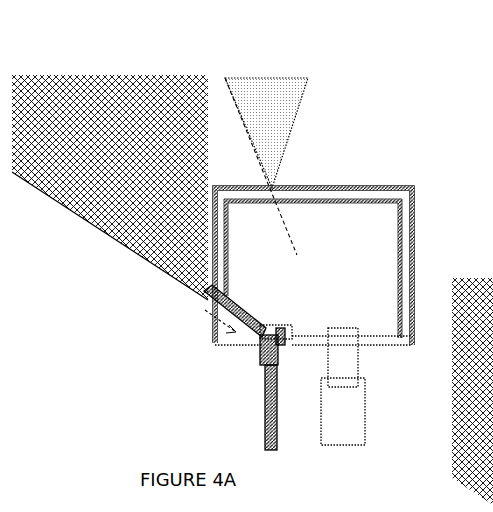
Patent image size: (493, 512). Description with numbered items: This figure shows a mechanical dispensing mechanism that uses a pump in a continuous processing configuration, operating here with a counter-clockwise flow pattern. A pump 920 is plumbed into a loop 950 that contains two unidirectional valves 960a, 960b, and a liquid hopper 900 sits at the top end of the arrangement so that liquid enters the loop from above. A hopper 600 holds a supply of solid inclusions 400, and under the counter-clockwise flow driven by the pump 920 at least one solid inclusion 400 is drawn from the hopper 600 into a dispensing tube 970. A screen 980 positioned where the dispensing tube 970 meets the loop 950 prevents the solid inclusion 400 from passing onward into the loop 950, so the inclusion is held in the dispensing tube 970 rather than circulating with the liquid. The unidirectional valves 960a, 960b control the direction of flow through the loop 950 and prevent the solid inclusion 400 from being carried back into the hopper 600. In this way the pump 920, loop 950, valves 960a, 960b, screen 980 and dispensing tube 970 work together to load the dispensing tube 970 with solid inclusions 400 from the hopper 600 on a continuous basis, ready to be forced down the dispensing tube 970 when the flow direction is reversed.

The solid inclusion 400 is at (92, 77).
The hopper 600 is at (95, 228).
The liquid hopper 900 is at (300, 106).
The loop 950 is at (413, 210).
The unidirectional valve 960a is at (267, 316).
The unidirectional valve 960b is at (306, 321).
The dispensing tube 970 is at (265, 388).
The screen 980 is at (261, 354).
The pump 920 is at (366, 415).